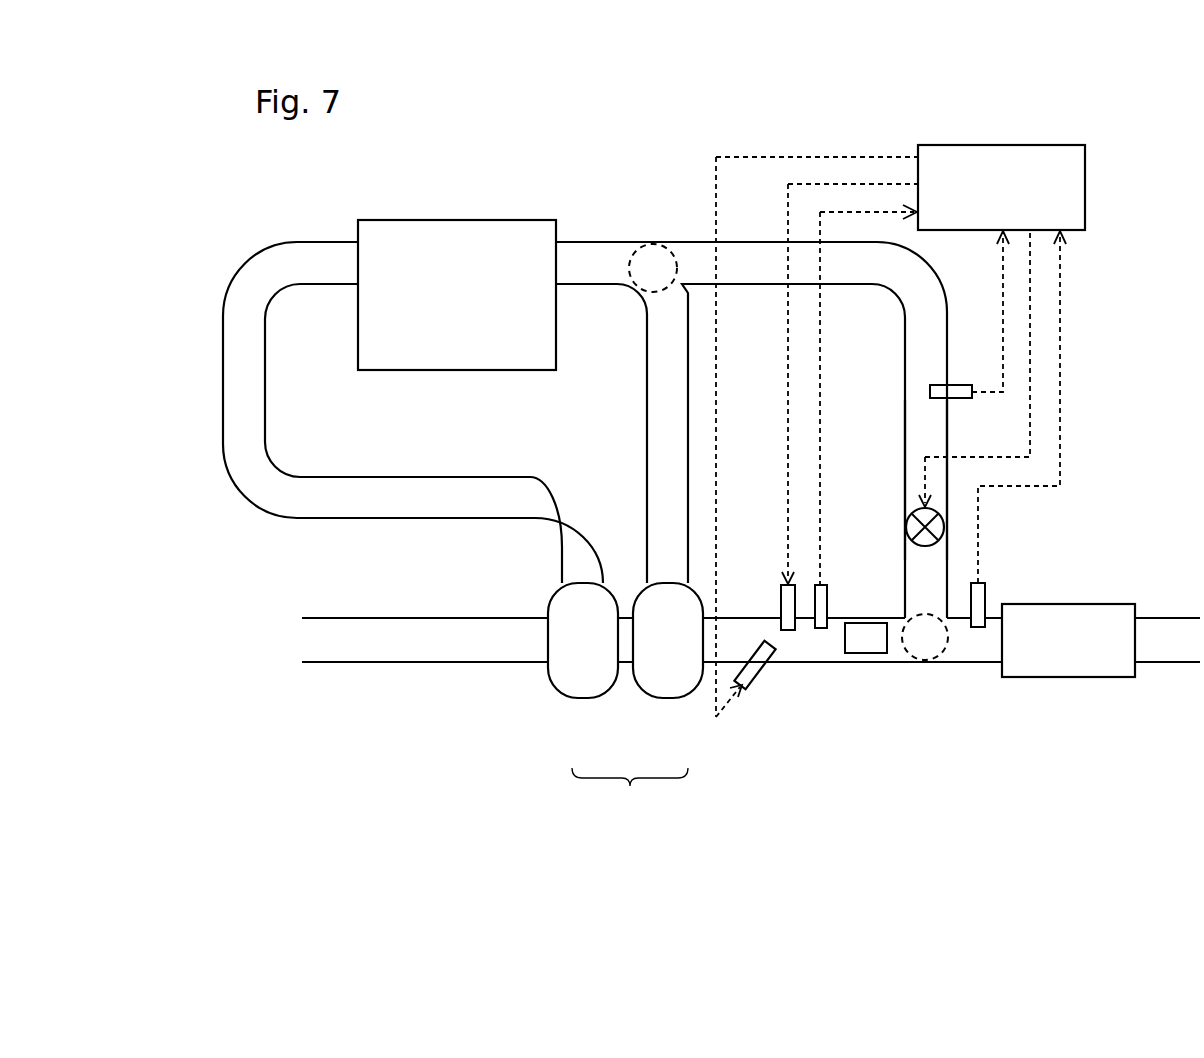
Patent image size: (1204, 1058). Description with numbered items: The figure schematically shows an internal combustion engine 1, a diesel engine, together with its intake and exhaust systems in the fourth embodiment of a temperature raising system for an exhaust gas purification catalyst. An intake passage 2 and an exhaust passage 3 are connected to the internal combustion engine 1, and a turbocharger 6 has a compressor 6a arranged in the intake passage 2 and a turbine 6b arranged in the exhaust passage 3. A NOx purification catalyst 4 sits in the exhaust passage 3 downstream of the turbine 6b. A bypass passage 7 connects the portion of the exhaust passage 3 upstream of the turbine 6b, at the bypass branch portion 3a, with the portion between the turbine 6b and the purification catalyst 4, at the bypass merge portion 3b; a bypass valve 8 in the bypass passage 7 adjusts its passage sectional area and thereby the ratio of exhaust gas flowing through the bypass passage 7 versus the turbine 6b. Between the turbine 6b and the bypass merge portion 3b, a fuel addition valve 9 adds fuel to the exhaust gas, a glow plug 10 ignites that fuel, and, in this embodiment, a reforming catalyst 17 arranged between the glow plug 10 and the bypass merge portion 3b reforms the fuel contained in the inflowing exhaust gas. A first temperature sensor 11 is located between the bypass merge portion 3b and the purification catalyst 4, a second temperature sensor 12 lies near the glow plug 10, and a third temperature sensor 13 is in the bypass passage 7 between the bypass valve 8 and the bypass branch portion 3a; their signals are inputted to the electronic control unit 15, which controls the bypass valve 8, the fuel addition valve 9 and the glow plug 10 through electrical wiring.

The internal combustion engine 1 is at (465, 218).
The intake passage 2 is at (252, 503).
The exhaust passage 3 is at (645, 420).
The bypass branch portion 3a is at (652, 260).
The bypass merge portion 3b is at (932, 658).
The NOx purification catalyst 4 is at (1068, 670).
The turbocharger 6 is at (630, 793).
The compressor 6a is at (583, 698).
The turbine 6b is at (665, 698).
The bypass passage 7 is at (913, 425).
The bypass valve 8 is at (906, 523).
The fuel addition valve 9 is at (760, 670).
The glow plug 10 is at (783, 605).
The first temperature sensor 11 is at (980, 603).
The second temperature sensor 12 is at (823, 617).
The third temperature sensor 13 is at (958, 390).
The electronic control unit 15 is at (1060, 188).
The reforming catalyst 17 is at (860, 632).